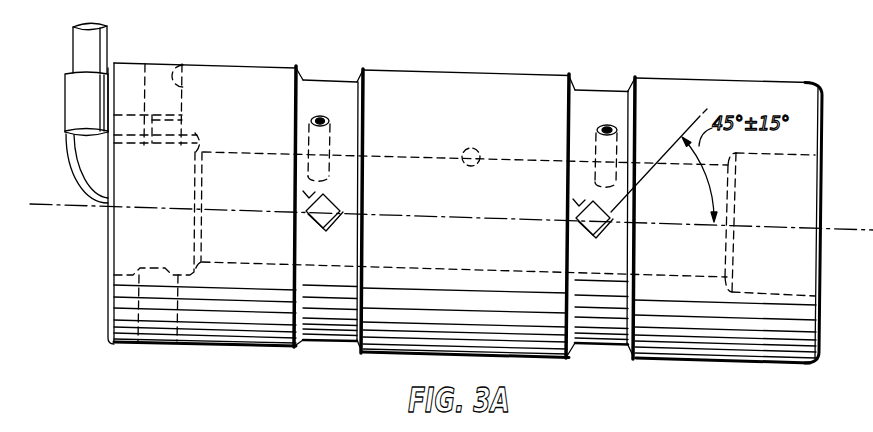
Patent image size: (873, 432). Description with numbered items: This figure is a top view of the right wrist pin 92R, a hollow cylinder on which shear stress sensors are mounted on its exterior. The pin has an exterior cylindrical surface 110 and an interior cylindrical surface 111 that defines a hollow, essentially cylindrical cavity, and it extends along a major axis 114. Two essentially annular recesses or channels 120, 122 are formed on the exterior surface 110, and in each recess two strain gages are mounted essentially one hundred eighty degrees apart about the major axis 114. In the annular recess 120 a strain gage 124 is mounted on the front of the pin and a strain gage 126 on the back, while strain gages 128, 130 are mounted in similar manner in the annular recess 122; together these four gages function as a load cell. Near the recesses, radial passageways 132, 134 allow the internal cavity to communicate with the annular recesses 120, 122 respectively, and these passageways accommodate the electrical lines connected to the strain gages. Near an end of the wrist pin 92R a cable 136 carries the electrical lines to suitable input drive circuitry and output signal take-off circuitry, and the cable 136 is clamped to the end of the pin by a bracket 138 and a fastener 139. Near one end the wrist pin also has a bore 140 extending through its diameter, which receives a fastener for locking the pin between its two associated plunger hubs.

The right wrist pin 92R is at (322, 366).
The exterior cylindrical surface 110 is at (507, 70).
The interior cylindrical surface 111 is at (470, 146).
The major axis 114 is at (86, 207).
The annular recess 120 is at (337, 80).
The annular recess 122 is at (604, 90).
The strain gage 124 is at (337, 200).
The strain gage 126 is at (303, 191).
The strain gage 128 is at (609, 216).
The strain gage 130 is at (573, 200).
The radial passageway 132 is at (332, 142).
The radial passageway 134 is at (620, 140).
The cable 136 is at (106, 38).
The bracket 138 is at (66, 132).
The fastener 139 is at (195, 118).
The bore 140 is at (176, 64).